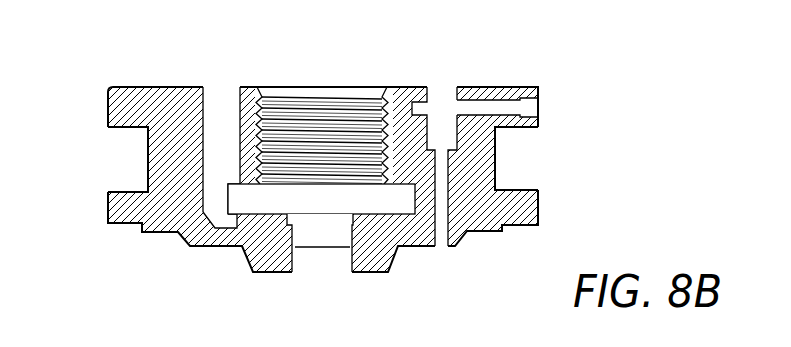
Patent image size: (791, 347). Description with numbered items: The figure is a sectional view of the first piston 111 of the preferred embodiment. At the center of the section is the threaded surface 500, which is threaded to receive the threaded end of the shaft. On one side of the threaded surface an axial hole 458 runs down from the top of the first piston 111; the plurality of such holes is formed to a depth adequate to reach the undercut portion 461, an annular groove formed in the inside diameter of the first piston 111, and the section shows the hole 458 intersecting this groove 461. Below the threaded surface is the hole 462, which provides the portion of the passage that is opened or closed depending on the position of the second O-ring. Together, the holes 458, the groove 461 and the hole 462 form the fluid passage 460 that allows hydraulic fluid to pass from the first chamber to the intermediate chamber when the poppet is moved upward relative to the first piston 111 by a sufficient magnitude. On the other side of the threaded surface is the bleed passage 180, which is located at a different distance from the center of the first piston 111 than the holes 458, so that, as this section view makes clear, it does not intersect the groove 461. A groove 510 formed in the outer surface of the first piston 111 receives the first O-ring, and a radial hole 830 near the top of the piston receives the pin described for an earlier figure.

The first piston 111 is at (126, 218).
The bleed passage 180 is at (442, 236).
The axial hole 458 is at (219, 92).
The fluid passage 460 is at (212, 123).
The undercut portion 461 is at (230, 205).
The hole 462 is at (293, 232).
The threaded surface 500 is at (287, 118).
The groove 510 is at (128, 190).
The radial hole 830 is at (487, 107).